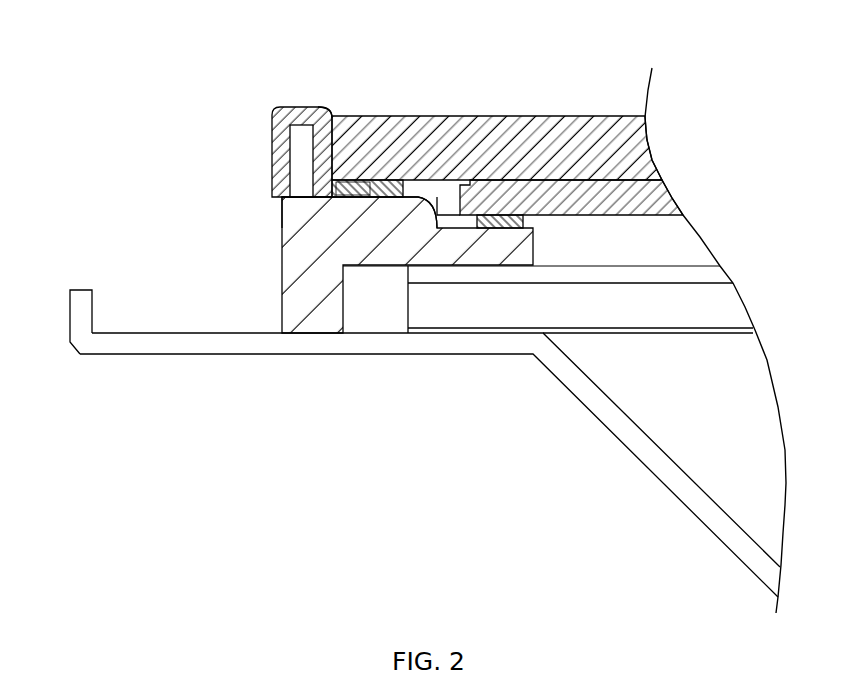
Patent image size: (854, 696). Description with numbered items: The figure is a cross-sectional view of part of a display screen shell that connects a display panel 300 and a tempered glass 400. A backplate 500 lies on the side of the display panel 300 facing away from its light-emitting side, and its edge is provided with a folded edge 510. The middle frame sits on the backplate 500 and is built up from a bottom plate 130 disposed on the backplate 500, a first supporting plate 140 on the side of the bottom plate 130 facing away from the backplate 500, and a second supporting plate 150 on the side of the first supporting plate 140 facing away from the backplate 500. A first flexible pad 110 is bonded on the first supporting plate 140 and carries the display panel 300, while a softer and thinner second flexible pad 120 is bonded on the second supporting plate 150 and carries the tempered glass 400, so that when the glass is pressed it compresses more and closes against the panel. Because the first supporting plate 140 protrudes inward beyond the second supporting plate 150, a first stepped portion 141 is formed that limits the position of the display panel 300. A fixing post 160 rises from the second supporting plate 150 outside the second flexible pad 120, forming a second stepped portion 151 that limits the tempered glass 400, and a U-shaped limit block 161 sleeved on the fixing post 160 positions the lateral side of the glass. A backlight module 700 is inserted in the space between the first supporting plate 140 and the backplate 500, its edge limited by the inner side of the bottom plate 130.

The first flexible pad 110 is at (340, 212).
The second flexible pad 120 is at (540, 183).
The bottom plate 130 is at (282, 294).
The first supporting plate 140 is at (512, 232).
The first stepped portion 141 is at (439, 203).
The second supporting plate 150 is at (392, 180).
The second stepped portion 151 is at (350, 180).
The fixing post 160 is at (302, 160).
The limit block 161 is at (317, 107).
The display panel 300 is at (612, 200).
The tempered glass 400 is at (490, 116).
The backplate 500 is at (308, 354).
The folded edge 510 is at (93, 309).
The backlight module 700 is at (640, 315).